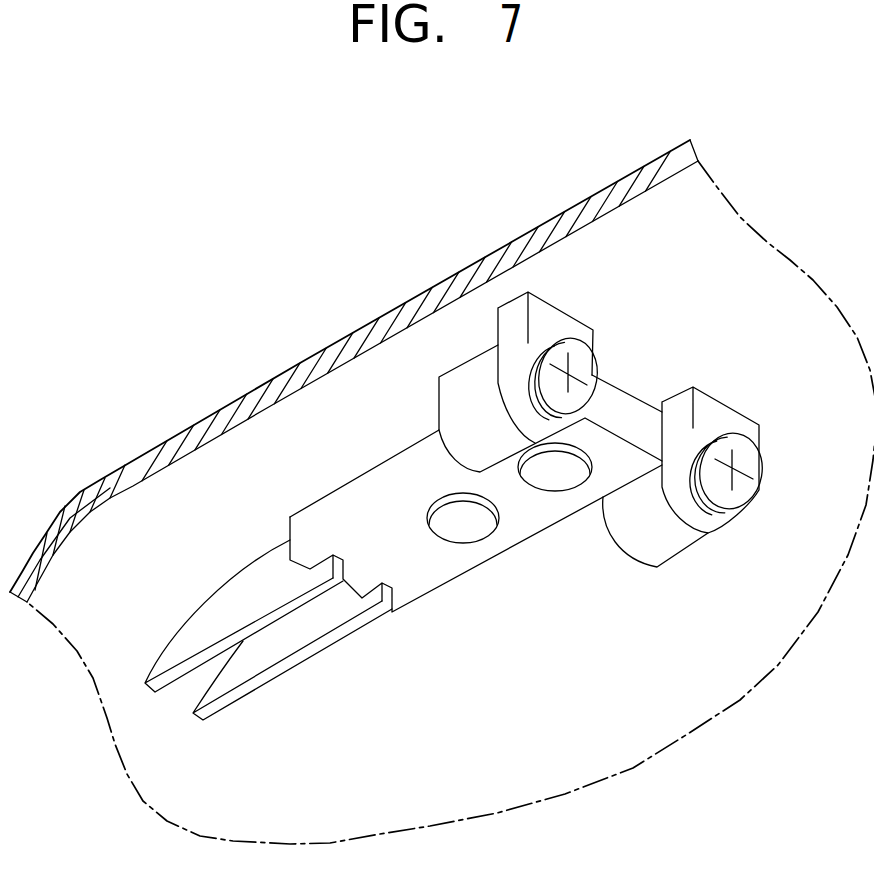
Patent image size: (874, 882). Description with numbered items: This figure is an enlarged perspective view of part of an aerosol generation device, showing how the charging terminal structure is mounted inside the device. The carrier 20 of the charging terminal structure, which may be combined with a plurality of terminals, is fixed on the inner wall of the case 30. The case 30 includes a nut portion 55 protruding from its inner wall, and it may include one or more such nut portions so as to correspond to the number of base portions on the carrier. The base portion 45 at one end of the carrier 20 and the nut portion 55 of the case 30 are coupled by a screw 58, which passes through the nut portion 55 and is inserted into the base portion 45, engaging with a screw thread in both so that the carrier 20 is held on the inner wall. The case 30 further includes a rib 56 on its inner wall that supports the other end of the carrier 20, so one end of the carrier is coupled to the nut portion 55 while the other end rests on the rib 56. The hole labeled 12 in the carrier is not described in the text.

The case 30 is at (493, 250).
The carrier 20 is at (403, 536).
The rib 56 is at (247, 597).
The hole 12 is at (472, 530).
The screw 58 is at (582, 366).
The nut portion 55 is at (713, 417).
The base portion 45 is at (645, 543).